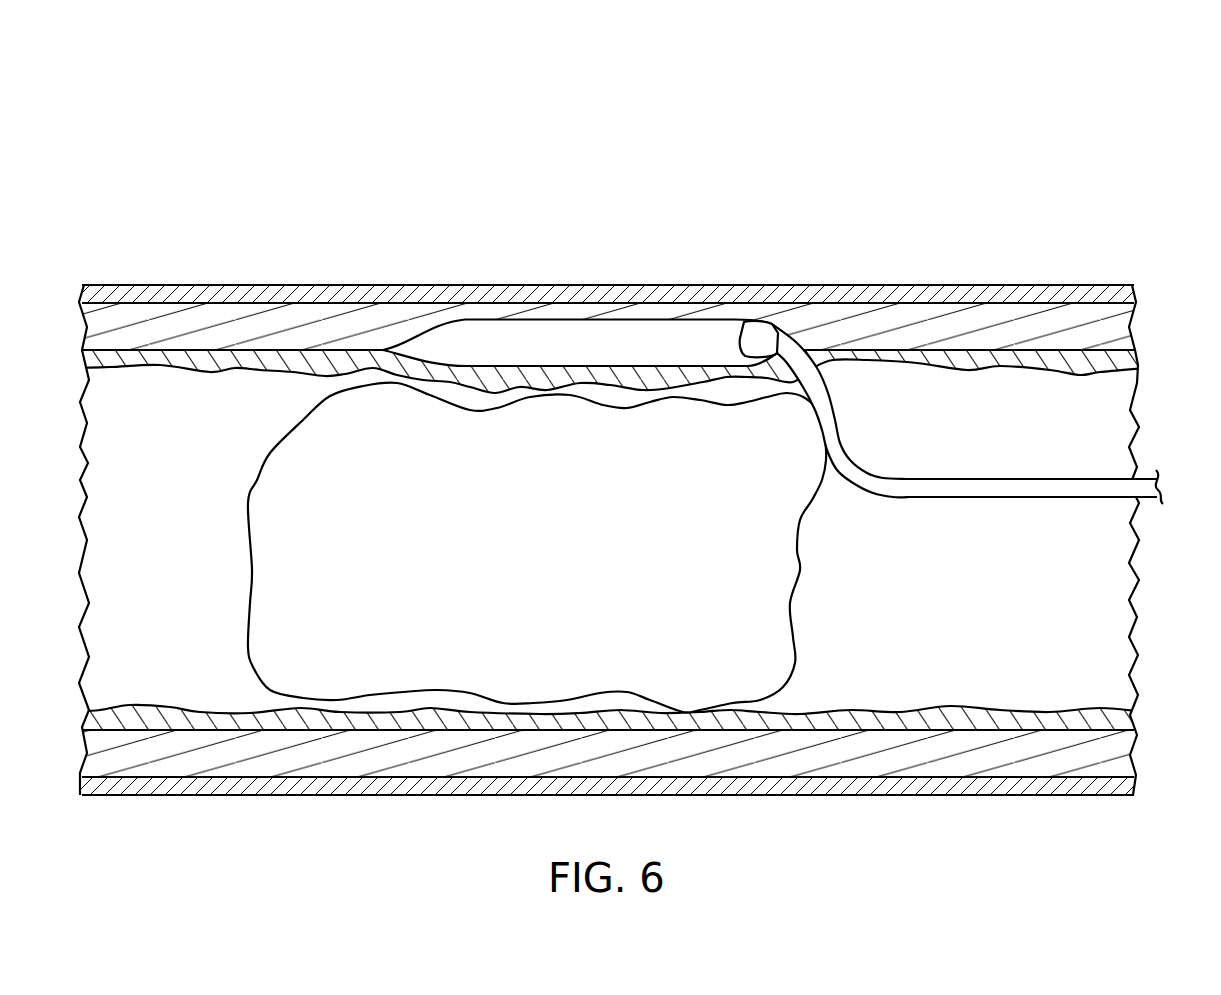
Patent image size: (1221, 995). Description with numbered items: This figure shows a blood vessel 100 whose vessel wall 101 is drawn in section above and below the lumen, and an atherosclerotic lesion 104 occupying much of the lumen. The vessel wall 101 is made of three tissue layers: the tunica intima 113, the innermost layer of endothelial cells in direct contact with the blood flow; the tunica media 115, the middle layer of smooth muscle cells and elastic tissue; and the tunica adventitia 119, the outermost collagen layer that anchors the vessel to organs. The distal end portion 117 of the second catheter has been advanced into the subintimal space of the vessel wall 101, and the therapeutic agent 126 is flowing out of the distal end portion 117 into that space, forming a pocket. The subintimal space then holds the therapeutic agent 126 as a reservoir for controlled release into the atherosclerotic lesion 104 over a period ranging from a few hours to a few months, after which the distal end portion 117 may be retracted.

The blood vessel 100 is at (773, 285).
The vessel wall 101 is at (634, 494).
The atherosclerotic lesion 104 is at (288, 587).
The tunica intima 113 is at (1128, 358).
The tunica media 115 is at (1128, 320).
The distal end portion 117 is at (832, 420).
The tunica adventitia 119 is at (1020, 287).
The therapeutic agent 126 is at (582, 327).